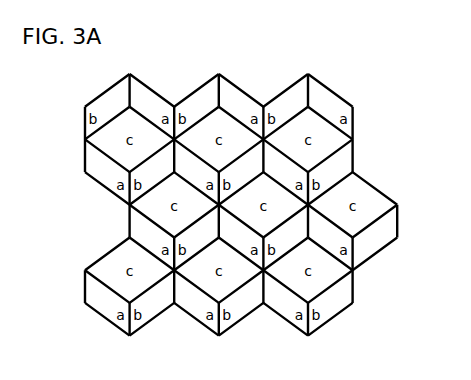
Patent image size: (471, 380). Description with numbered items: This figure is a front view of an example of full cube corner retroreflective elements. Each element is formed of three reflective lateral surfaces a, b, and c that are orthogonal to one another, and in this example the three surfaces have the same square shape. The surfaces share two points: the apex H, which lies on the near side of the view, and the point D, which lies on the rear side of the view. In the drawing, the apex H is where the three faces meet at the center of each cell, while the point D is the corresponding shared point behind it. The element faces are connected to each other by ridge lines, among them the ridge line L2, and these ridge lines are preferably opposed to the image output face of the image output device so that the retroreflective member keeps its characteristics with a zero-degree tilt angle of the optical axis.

The point D is at (310, 113).
The apex H is at (296, 132).
The ridge line L2 is at (308, 204).